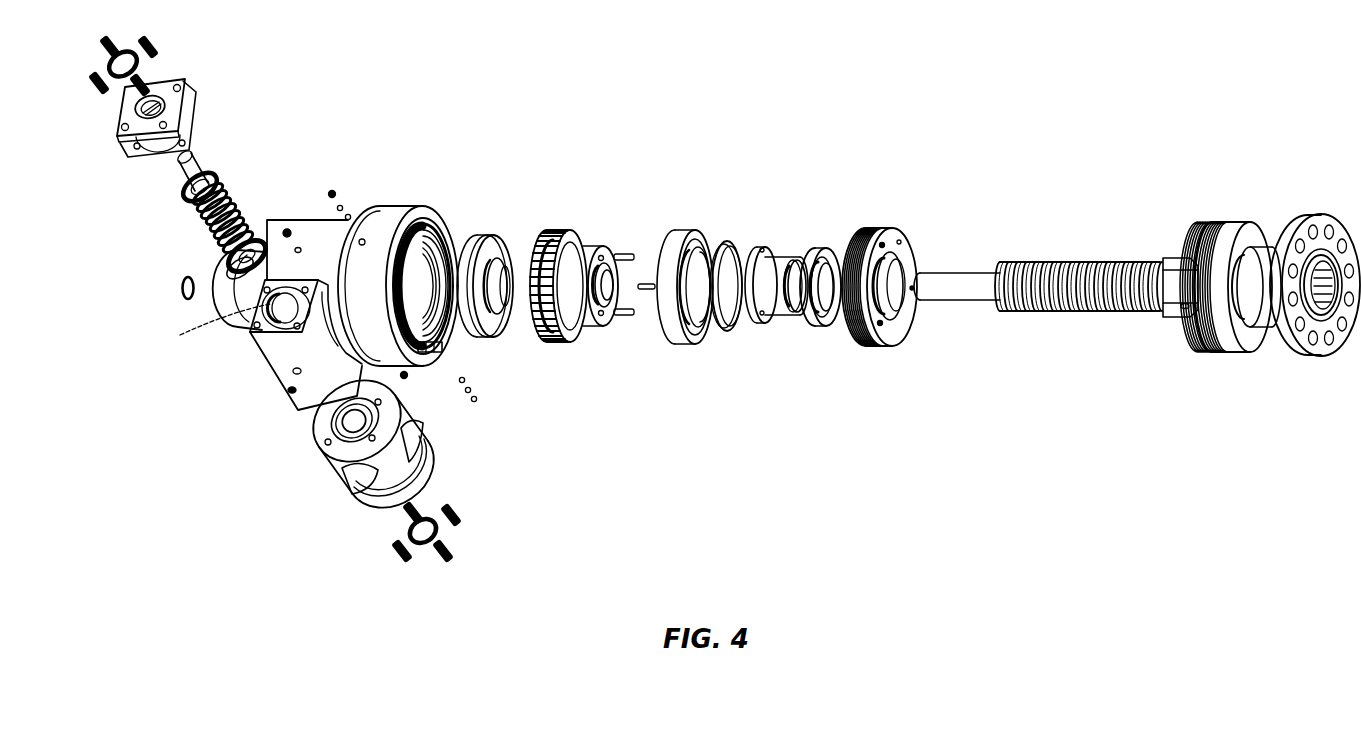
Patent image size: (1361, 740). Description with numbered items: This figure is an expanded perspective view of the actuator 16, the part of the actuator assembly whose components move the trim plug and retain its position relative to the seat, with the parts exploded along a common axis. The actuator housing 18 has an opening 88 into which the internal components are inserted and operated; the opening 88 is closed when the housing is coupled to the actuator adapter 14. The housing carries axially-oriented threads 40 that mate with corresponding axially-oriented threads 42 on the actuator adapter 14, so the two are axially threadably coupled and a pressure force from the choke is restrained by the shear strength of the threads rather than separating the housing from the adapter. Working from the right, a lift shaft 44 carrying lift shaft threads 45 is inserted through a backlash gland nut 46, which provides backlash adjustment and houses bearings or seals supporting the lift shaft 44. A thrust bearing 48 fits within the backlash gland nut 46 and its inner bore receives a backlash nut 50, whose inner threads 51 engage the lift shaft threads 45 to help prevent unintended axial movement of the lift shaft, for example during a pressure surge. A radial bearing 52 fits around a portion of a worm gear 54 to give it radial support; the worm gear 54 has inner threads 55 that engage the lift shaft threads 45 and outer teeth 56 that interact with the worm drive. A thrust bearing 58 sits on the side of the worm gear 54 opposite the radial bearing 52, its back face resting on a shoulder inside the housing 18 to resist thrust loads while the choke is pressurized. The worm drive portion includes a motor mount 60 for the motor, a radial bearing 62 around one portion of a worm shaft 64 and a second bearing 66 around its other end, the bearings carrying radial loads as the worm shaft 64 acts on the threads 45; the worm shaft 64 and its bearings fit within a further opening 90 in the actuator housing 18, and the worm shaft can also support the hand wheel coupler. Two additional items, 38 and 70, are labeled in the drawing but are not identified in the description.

The actuator adapter 14 is at (1297, 222).
The actuator 16 is at (693, 72).
The actuator housing 18 is at (280, 372).
The gear housing 38 is at (402, 210).
The axially-oriented threads 40 is at (438, 245).
The axially-oriented threads 42 is at (1235, 222).
The lift shaft 44 is at (960, 273).
The lift shaft threads 45 is at (1098, 269).
The backlash gland nut 46 is at (879, 236).
The thrust bearing 48 is at (820, 324).
The backlash nut 50 is at (768, 250).
The inner threads 51 is at (903, 242).
The radial bearing 52 is at (684, 244).
The worm gear 54 is at (590, 328).
The inner threads 55 is at (613, 290).
The outer teeth 56 is at (568, 238).
The thrust bearing 58 is at (487, 330).
The motor mount 60 is at (334, 462).
The radial bearing 62 is at (178, 194).
The worm shaft 64 is at (206, 232).
The second bearing 66 is at (176, 290).
The pins 70 is at (626, 318).
The opening 88 is at (425, 268).
The opening 90 is at (208, 327).